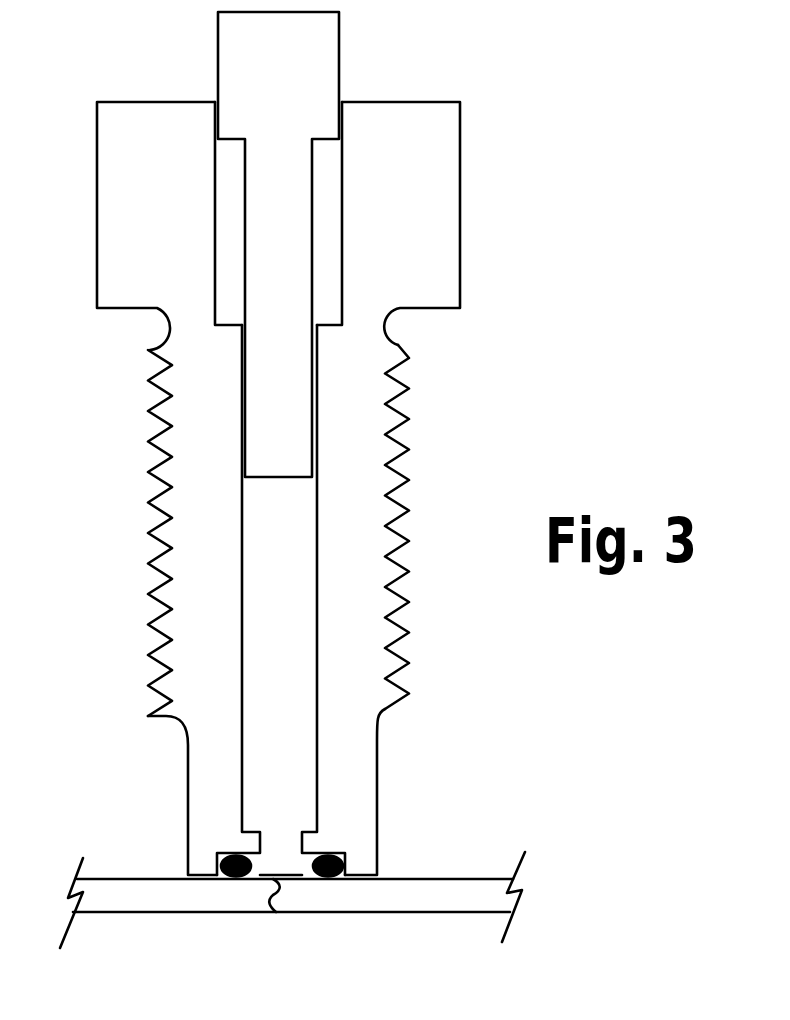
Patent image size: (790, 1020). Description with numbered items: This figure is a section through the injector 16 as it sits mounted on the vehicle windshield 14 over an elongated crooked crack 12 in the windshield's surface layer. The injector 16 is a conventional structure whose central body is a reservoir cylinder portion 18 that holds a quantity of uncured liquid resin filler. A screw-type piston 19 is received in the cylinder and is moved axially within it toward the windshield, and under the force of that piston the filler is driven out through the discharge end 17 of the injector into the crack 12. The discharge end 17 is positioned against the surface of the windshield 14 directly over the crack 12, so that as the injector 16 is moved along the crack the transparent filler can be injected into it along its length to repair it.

The crack 12 is at (285, 907).
The vehicle windshield 14 is at (128, 893).
The injector 16 is at (148, 490).
The discharge end 17 is at (258, 880).
The reservoir cylinder portion 18 is at (273, 755).
The screw-type piston 19 is at (268, 297).